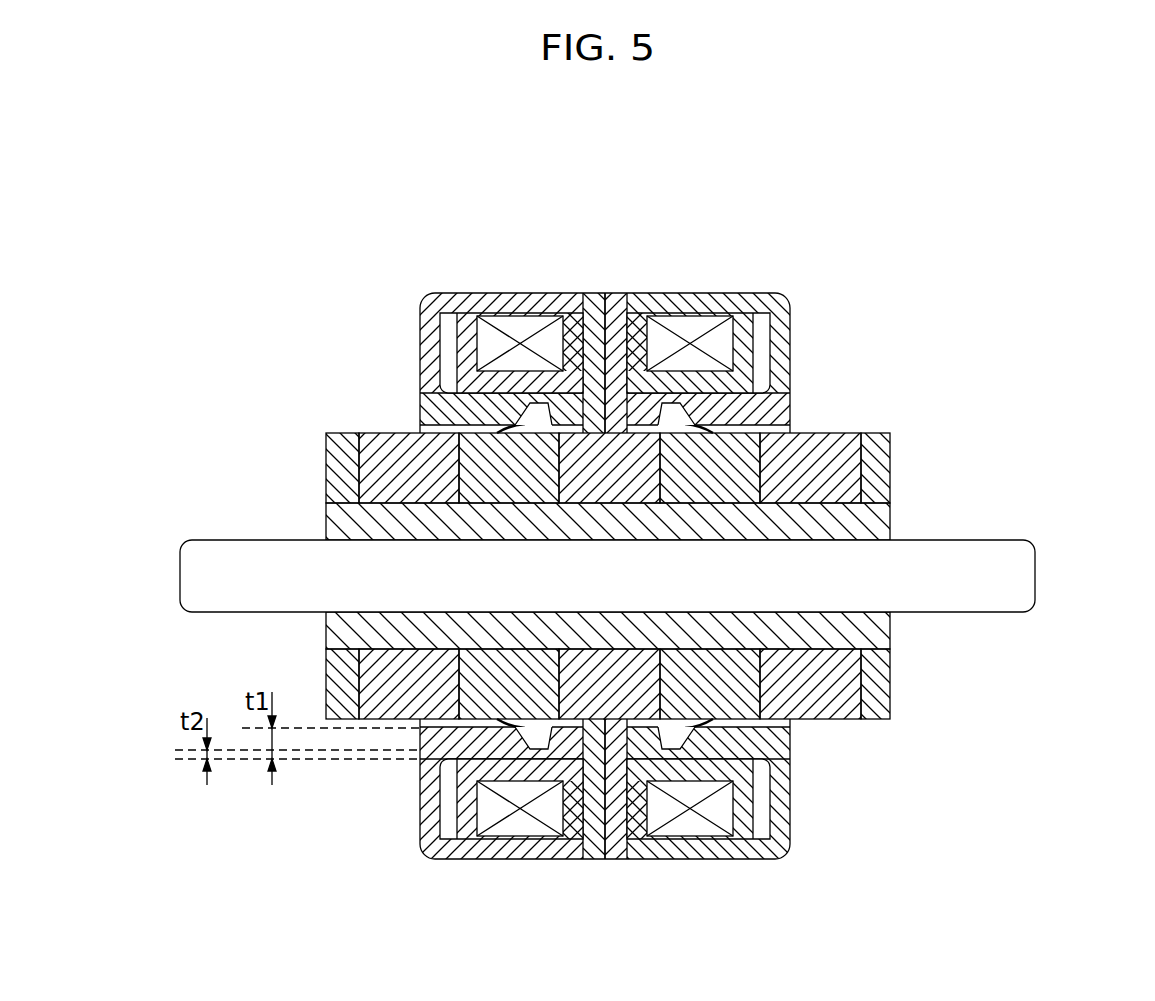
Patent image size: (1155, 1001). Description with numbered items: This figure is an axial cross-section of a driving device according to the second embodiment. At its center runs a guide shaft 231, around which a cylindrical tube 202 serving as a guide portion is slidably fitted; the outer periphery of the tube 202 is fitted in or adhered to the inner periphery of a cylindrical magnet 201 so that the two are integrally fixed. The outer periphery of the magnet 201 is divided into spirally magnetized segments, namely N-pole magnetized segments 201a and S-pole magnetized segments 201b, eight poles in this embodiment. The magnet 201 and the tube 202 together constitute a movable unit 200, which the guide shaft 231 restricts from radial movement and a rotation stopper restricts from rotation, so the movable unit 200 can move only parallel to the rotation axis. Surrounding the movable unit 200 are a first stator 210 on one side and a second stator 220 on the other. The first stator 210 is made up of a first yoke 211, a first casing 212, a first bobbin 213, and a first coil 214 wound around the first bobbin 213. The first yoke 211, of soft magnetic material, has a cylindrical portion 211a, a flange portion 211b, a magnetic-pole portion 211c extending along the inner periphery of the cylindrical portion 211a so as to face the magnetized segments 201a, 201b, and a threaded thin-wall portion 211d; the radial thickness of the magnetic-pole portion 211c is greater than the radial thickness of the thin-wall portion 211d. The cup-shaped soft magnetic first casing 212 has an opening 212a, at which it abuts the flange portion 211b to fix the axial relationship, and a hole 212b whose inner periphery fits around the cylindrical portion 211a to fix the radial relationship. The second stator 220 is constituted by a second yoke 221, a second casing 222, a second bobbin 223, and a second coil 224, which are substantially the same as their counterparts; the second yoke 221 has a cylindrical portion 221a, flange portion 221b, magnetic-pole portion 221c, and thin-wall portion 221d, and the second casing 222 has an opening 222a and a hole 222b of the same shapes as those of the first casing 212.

The movable unit 200 is at (729, 514).
The cylindrical magnet 201 is at (684, 518).
The N-pole magnetized segments 201a is at (893, 462).
The S-pole magnetized segments 201b is at (893, 485).
The cylindrical tube 202 is at (695, 549).
The guide shaft 231 is at (968, 552).
The first stator 210 is at (389, 516).
The first yoke 211 is at (484, 543).
The cylindrical portion 211a is at (527, 403).
The flange portion 211b is at (593, 383).
The magnetic-pole portion 211c is at (487, 738).
The threaded thin-wall portion 211d is at (525, 735).
The first casing 212 is at (400, 499).
The opening 212a is at (588, 332).
The hole 212b is at (430, 365).
The first bobbin 213 is at (455, 345).
The first coil 214 is at (482, 488).
The second stator 220 is at (805, 516).
The second yoke 221 is at (713, 544).
The cylindrical portion 221a is at (684, 403).
The flange portion 221b is at (617, 383).
The magnetic-pole portion 221c is at (657, 738).
The threaded thin-wall portion 221d is at (693, 738).
The second casing 222 is at (816, 499).
The opening 222a is at (622, 332).
The hole 222b is at (781, 365).
The second bobbin 223 is at (756, 345).
The second coil 224 is at (731, 489).